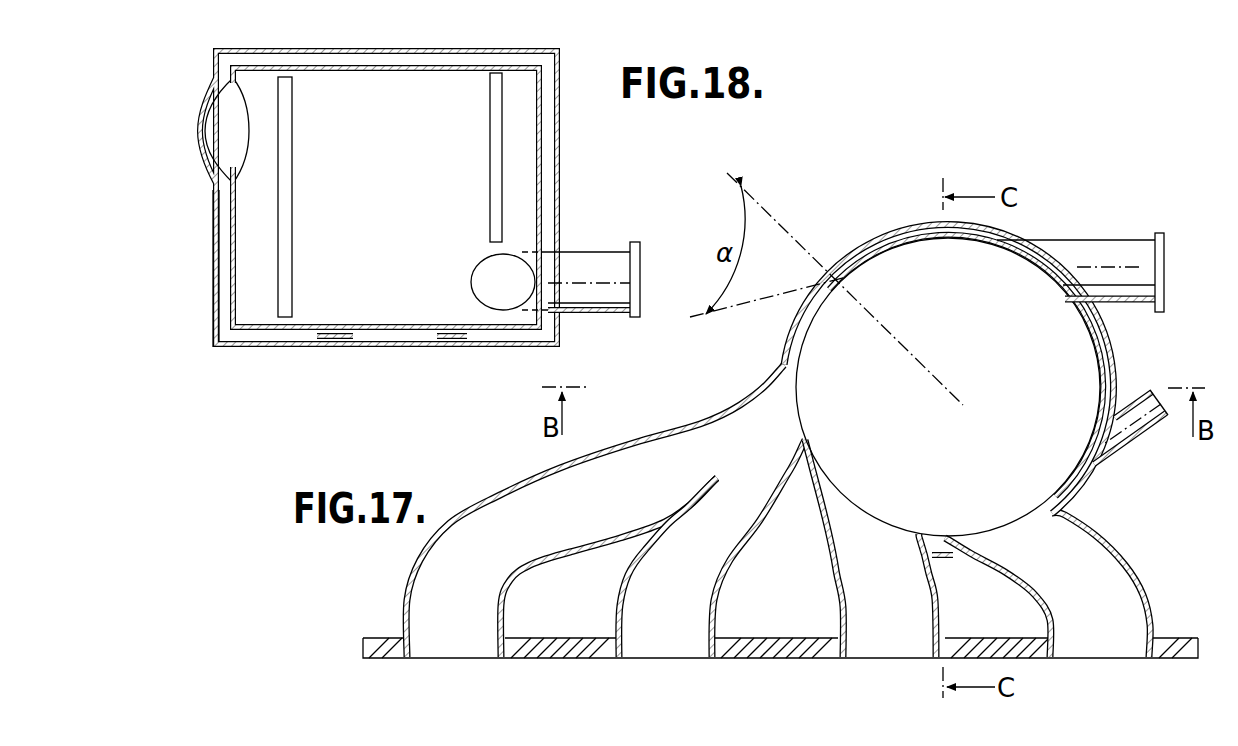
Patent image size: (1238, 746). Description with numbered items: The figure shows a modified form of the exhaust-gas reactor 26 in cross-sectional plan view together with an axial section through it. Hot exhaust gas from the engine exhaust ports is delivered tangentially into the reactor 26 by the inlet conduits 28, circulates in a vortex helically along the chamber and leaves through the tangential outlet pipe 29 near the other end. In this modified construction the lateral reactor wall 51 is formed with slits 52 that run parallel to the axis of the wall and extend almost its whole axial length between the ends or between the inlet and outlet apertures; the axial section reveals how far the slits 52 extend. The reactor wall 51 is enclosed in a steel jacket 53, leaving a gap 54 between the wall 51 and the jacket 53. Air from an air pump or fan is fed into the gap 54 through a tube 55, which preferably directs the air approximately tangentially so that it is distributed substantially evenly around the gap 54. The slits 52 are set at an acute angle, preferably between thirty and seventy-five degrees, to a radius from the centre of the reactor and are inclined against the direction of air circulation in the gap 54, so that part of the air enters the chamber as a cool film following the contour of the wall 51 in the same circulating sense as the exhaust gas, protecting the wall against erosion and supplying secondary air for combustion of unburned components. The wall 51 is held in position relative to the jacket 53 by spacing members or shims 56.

In FIG. 17, the reactor 26 is at (675, 402).
In FIG. 18, the conduit 28 is at (203, 105).
In FIG. 18, the tangential outlet pipe 29 is at (604, 263).
In FIG. 17, the tangential outlet pipe 29 is at (1122, 248).
In FIG. 18, the reactor wall 51 is at (548, 96).
In FIG. 17, the reactor wall 51 is at (1101, 352).
In FIG. 18, the slits 52 is at (494, 132).
In FIG. 17, the slits 52 is at (829, 284).
In FIG. 18, the steel jacket 53 is at (218, 307).
In FIG. 17, the steel jacket 53 is at (777, 343).
In FIG. 18, the gap 54 is at (548, 186).
In FIG. 17, the gap 54 is at (890, 226).
In FIG. 17, the tube 55 is at (1128, 448).
In FIG. 18, the spacing members or shims 56 is at (440, 334).